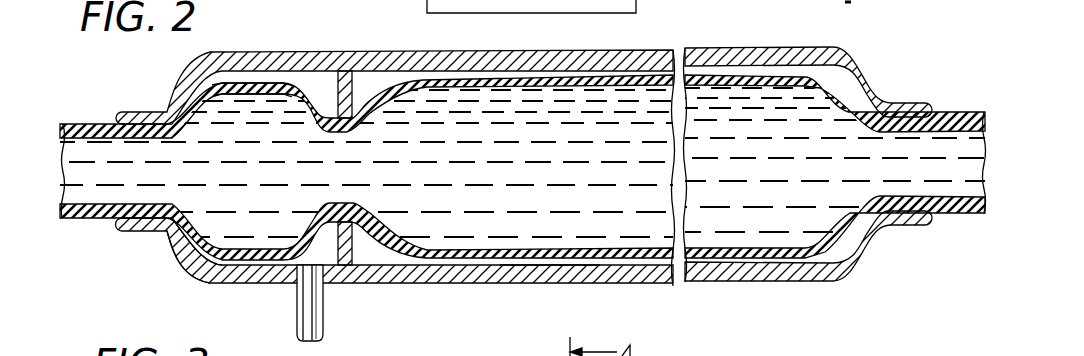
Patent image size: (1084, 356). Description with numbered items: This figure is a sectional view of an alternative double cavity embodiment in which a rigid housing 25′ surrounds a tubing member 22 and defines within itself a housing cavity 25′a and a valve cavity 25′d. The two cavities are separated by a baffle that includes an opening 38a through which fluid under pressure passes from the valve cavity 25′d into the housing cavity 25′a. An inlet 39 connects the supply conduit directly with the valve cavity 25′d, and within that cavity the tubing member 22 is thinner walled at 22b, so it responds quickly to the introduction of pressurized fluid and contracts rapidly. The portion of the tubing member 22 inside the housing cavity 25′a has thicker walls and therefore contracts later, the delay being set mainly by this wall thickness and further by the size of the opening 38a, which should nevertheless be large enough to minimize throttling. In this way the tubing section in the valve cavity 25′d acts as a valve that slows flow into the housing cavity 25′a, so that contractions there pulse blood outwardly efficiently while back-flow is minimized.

The tubing member 22 is at (87, 124).
The thinner walled portion of tubing member 22b is at (262, 84).
The rigid housing 25′ is at (488, 285).
The housing cavity 25′a is at (540, 263).
The valve cavity 25′d is at (226, 268).
The opening 38a is at (355, 244).
The inlet 39 is at (324, 313).